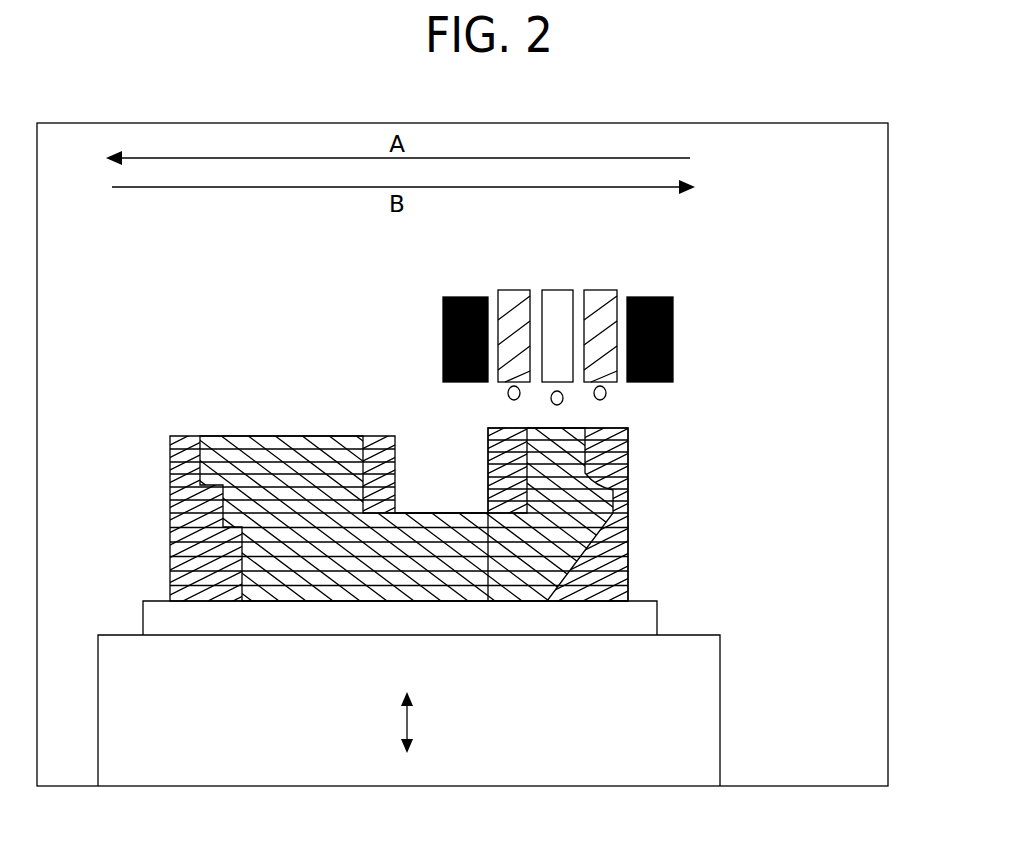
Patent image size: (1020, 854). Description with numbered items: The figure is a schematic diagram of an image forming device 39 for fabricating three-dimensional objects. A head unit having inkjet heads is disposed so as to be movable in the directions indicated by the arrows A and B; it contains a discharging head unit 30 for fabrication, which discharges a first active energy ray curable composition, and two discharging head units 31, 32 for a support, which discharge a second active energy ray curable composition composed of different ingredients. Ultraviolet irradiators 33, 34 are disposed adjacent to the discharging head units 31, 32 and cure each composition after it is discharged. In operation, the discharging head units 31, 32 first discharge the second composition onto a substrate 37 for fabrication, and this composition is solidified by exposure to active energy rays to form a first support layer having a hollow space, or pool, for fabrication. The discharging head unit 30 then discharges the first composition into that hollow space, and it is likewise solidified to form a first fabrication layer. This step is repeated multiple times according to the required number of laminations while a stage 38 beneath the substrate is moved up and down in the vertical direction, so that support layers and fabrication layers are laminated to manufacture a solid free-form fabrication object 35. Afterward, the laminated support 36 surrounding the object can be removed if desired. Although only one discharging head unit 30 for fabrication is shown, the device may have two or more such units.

The discharging head unit for fabrication 30 is at (558, 290).
The discharging head unit for a support 31 is at (515, 291).
The discharging head unit for a support 32 is at (592, 290).
The ultraviolet irradiator 33 is at (443, 312).
The ultraviolet irradiator 34 is at (673, 312).
The solid free-form fabrication object 35 is at (300, 424).
The laminated support 36 is at (640, 459).
The substrate for fabrication 37 is at (657, 612).
The stage 38 is at (720, 647).
The image forming device 39 is at (888, 146).